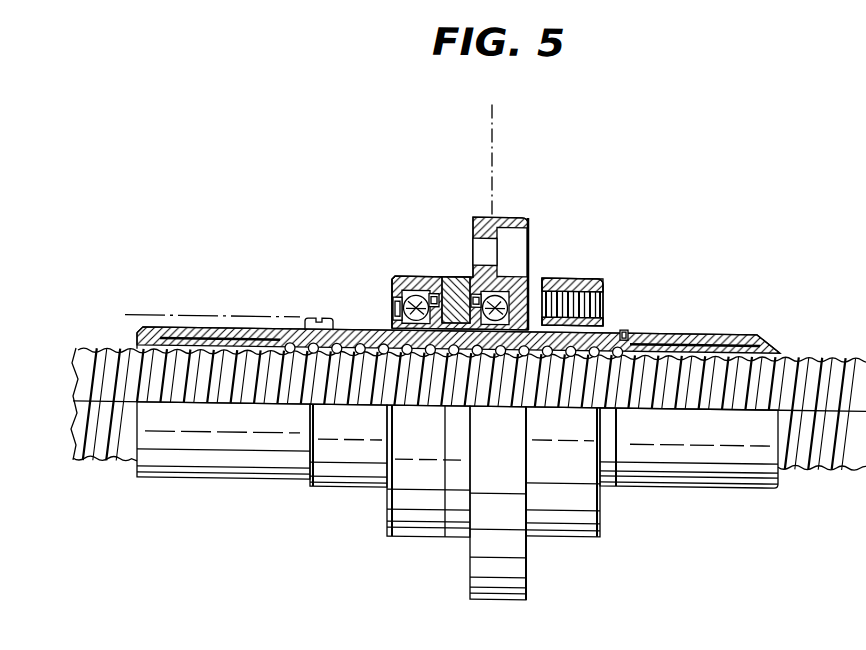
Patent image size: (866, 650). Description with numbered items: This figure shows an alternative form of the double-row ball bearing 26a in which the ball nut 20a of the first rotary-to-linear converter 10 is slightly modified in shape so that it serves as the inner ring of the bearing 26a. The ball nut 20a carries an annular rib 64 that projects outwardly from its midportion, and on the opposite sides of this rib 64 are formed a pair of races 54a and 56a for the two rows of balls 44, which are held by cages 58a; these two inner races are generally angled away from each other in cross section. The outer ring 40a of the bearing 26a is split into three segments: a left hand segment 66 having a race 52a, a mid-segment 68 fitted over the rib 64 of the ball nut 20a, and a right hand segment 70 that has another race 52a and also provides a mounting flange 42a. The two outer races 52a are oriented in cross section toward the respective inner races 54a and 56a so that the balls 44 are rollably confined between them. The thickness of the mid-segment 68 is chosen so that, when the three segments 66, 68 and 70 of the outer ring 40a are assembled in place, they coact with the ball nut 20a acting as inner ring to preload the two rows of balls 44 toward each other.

The first rotary-to-linear converter 10 is at (421, 544).
The ball nut 20a is at (577, 279).
The double-row ball bearing 26a is at (532, 196).
The outer ring 40a is at (432, 258).
The mounting flange 42a is at (495, 224).
The balls 44 is at (398, 344).
The outer races 52a is at (398, 305).
The inner race 54a is at (512, 305).
The inner race 56a is at (417, 295).
The cages 58a is at (392, 318).
The annular rib 64 is at (434, 342).
The left hand segment 66 is at (406, 292).
The mid-segment 68 is at (460, 271).
The right hand segment 70 is at (498, 259).